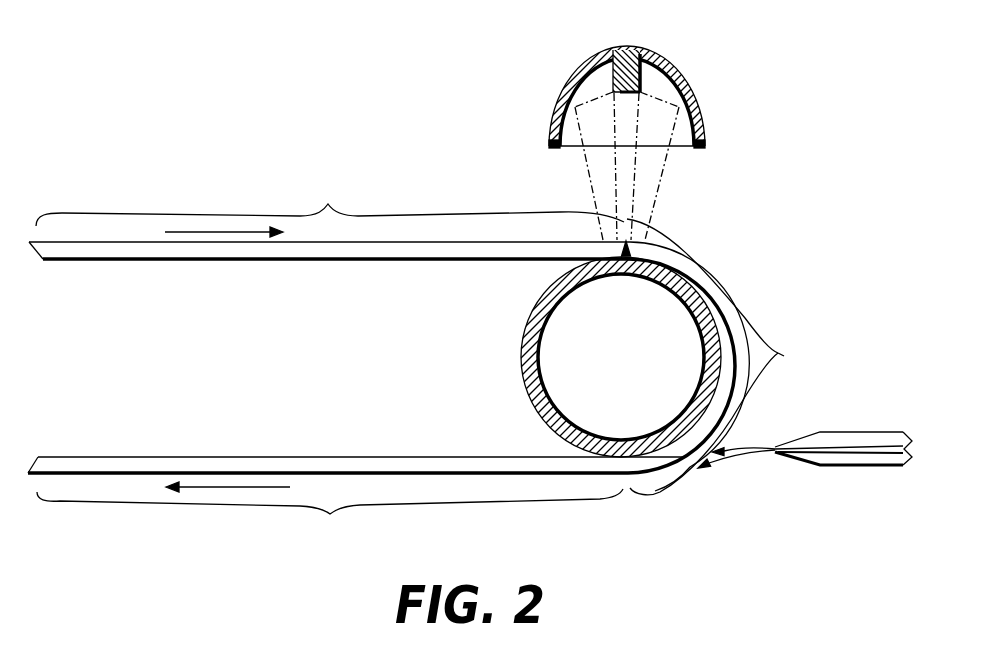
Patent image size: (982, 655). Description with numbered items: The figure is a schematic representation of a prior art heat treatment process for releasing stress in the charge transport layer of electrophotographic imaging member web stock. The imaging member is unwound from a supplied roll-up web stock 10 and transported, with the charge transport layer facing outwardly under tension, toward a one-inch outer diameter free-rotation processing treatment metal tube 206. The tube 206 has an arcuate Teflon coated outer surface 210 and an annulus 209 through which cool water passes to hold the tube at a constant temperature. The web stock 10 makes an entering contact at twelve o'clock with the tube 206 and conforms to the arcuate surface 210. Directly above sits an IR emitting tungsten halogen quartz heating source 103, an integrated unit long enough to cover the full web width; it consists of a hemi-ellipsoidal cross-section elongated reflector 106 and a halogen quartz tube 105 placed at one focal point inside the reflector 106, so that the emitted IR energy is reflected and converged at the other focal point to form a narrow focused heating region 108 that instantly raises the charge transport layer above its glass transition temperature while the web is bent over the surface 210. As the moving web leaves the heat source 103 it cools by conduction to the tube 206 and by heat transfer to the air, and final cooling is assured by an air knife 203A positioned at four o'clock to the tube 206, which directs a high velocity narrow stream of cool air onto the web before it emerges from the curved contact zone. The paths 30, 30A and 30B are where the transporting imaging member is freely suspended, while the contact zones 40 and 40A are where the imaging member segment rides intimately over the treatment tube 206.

The roll-up web stock 10 is at (68, 257).
The freely suspended path 30 is at (167, 187).
The freely suspended path 30A is at (330, 206).
The lower belt run 30B is at (330, 515).
The processing treatment metal tube 206 is at (497, 333).
The annulus 209 is at (587, 390).
The arcuate Teflon coated outer surface 210 is at (688, 294).
The focused heating region 108 is at (626, 256).
The IR emitting tungsten halogen quartz heating source 103 is at (543, 60).
The halogen quartz tube 105 is at (627, 58).
The hemi-ellipsoidal cross-section elongated reflector 106 is at (673, 72).
The contact zone 40 is at (738, 296).
The contact zone 40A is at (704, 424).
The air knife 203A is at (795, 481).